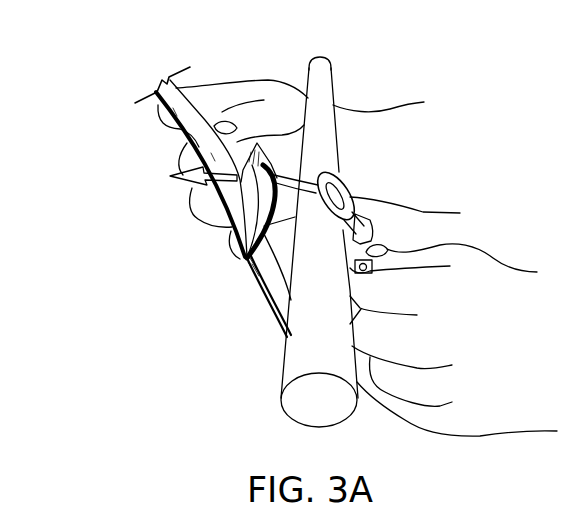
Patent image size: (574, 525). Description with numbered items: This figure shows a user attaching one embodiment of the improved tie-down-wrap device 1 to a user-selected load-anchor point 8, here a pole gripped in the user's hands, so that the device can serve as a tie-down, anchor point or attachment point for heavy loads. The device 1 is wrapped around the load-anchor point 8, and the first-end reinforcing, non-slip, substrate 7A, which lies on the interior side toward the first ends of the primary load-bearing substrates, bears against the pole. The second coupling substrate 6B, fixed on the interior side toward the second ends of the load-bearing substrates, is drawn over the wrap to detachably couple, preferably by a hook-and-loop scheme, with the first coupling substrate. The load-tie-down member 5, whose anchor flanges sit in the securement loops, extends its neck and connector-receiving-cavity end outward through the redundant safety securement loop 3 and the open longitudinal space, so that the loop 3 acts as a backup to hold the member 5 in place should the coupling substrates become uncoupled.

The tie-down-wrap device 1 is at (107, 162).
The redundant safety securement loop 3 is at (270, 143).
The load-tie-down member 5 is at (347, 184).
The second coupling substrate 6B is at (205, 107).
The first-end reinforcing, non-slip, substrate 7A is at (268, 291).
The user-selected load-anchor point 8 is at (284, 357).